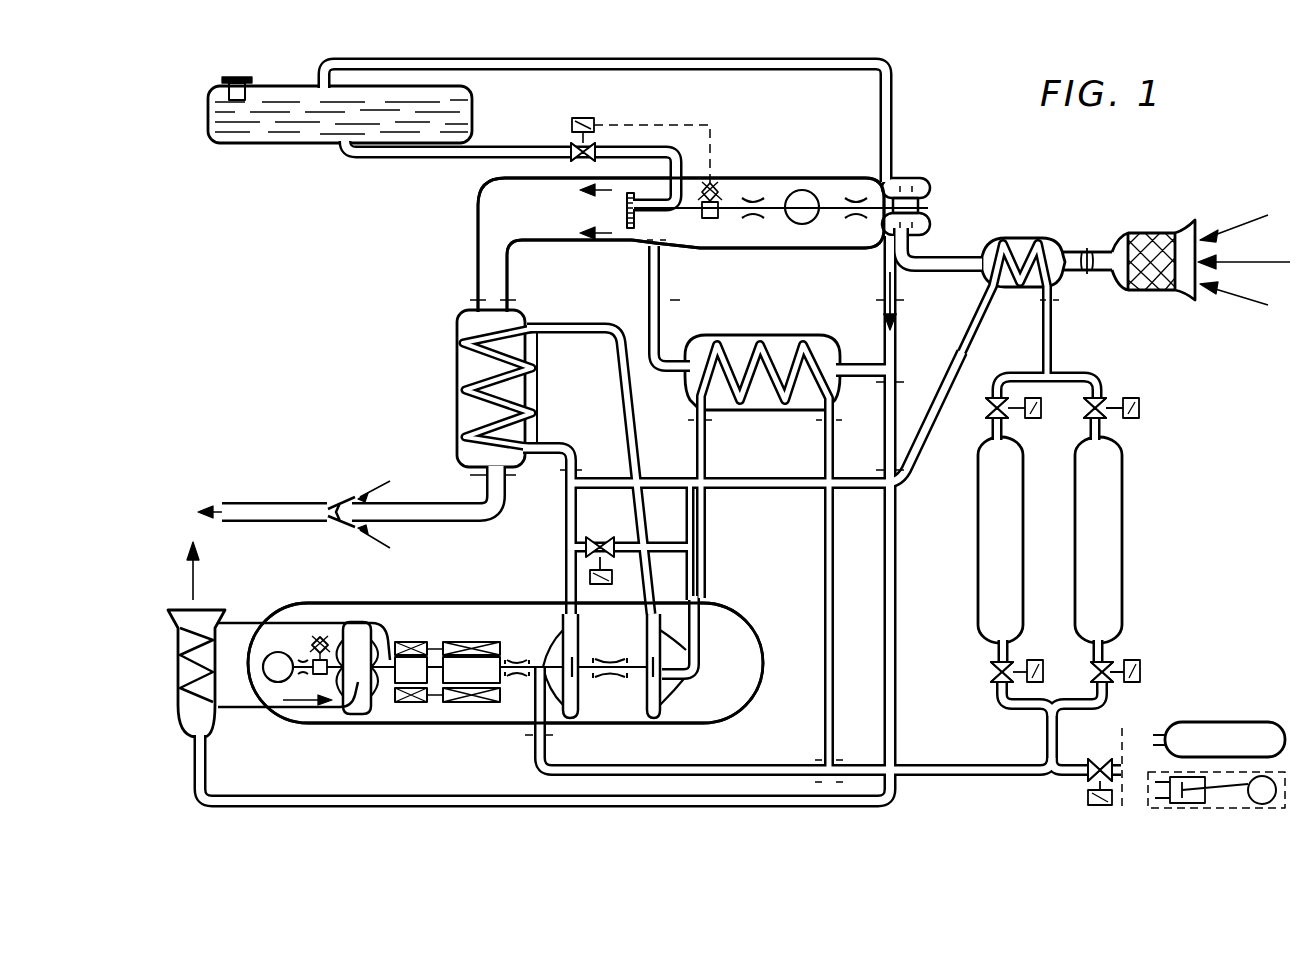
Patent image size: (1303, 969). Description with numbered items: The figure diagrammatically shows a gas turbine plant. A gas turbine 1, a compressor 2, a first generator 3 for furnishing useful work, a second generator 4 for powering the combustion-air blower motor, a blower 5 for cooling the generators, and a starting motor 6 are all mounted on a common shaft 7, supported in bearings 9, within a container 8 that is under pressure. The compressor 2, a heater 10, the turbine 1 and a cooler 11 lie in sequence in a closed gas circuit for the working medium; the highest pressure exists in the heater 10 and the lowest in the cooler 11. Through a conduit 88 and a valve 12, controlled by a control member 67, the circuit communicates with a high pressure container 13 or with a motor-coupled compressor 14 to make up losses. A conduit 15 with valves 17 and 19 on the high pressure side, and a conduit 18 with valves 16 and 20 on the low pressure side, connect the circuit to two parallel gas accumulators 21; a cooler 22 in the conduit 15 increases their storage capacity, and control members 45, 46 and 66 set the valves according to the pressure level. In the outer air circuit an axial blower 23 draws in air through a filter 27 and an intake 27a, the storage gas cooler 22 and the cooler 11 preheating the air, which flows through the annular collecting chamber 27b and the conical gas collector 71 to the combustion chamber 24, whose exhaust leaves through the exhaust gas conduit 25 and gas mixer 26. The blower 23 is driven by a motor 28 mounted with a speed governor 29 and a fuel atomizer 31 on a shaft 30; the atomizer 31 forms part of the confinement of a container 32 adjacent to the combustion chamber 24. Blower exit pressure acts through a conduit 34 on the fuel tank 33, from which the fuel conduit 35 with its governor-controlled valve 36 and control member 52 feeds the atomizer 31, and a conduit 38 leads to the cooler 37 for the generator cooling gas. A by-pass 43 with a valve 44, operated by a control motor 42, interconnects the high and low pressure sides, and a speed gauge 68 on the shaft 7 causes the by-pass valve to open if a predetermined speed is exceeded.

The gas turbine 1 is at (668, 658).
The compressor 2 is at (556, 648).
The first generator 3 is at (470, 660).
The second generator 4 is at (416, 642).
The blower 5 is at (366, 626).
The starting motor 6 is at (262, 660).
The common shaft 7 is at (632, 682).
The container 8 is at (505, 663).
The bearing 9 is at (302, 660).
The heater 10 is at (456, 348).
The cooler 11 is at (764, 338).
The valve 12 is at (1098, 760).
The high pressure container 13 is at (1232, 724).
The compressor 14 is at (1146, 782).
The conduit 15 is at (1045, 330).
The valve 16 is at (1091, 676).
The valve 17 is at (1086, 412).
The conduit 18 is at (930, 766).
The valve 19 is at (986, 412).
The valve 20 is at (991, 670).
The gas accumulators 21 is at (1076, 520).
The cooler 22 is at (1046, 238).
The axial blower 23 is at (926, 176).
The combustion chamber 24 is at (589, 245).
The exhaust gas conduit 25 is at (422, 512).
The gas mixture 26 is at (342, 500).
The filter 27 is at (1152, 232).
The intake pipe 27a is at (1088, 252).
The annular collecting chamber 27b is at (960, 254).
The motor 28 is at (808, 190).
The speed governor 29 is at (714, 182).
The shaft 30 is at (836, 252).
The fuel atomizer 31 is at (624, 212).
The container 32 is at (764, 188).
The fuel tank 33 is at (262, 96).
The conduit 34 is at (362, 72).
The fuel conduit 35 is at (432, 160).
The valve 36 is at (568, 146).
The cooler 37 is at (176, 610).
The conduit 38 is at (896, 556).
The control motor 42 is at (608, 582).
The by-pass 43 is at (670, 552).
The valve 44 is at (602, 546).
The control member 45 is at (1032, 420).
The control member 46 is at (1044, 660).
The control member 52 is at (580, 118).
The control member 66 is at (1142, 402).
The control member 67 is at (1088, 798).
The speed gauge 68 is at (324, 634).
The conical gas collector 71 is at (648, 300).
The conduit 88 is at (1046, 776).